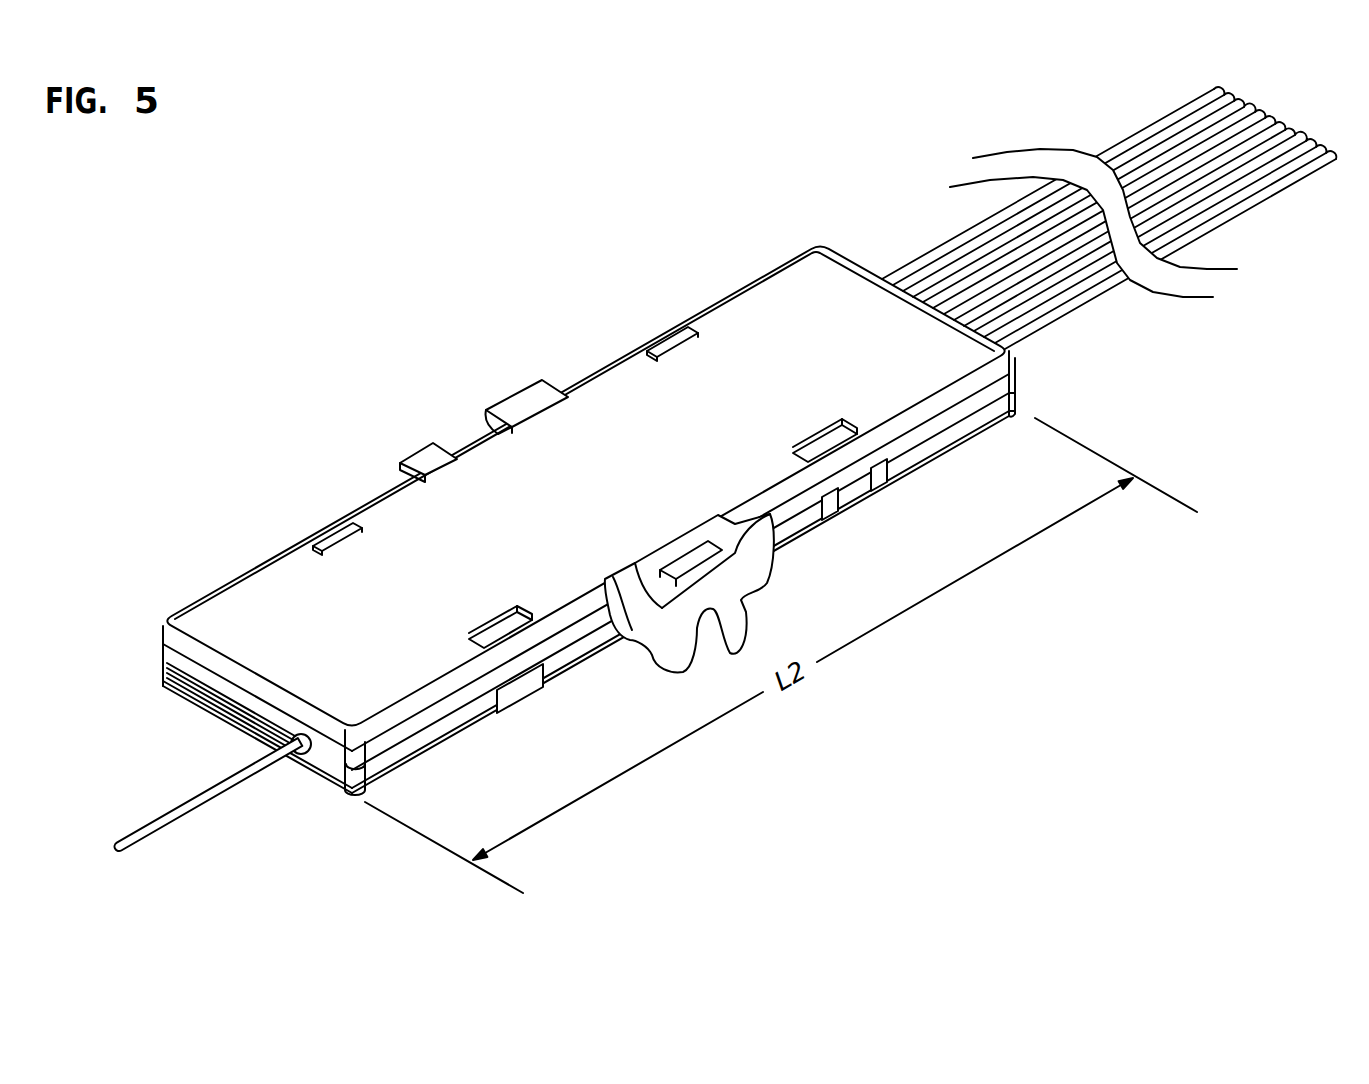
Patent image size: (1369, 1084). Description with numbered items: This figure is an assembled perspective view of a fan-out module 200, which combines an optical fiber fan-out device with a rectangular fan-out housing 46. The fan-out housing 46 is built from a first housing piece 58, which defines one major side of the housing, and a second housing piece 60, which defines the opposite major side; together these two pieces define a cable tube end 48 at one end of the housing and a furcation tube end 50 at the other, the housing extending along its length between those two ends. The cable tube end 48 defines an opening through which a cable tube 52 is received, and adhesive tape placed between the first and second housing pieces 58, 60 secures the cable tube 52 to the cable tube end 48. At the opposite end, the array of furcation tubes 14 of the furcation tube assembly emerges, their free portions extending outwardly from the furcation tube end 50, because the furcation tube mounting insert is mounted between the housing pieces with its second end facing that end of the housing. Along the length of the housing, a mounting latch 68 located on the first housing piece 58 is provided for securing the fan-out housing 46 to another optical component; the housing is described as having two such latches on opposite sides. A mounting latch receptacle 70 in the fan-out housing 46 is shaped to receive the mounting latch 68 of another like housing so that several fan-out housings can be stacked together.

The fan-out module 200 is at (633, 179).
The furcation tube end 50 is at (869, 235).
The fan-out housing 46 is at (252, 559).
The cable tube end 48 is at (175, 714).
The cable tube 52 is at (168, 820).
The first housing piece 58 is at (1026, 358).
The second housing piece 60 is at (1029, 411).
The mounting latch 68 is at (763, 614).
The mounting latch receptacle 70 is at (704, 554).
The furcation tube 14 is at (1276, 211).